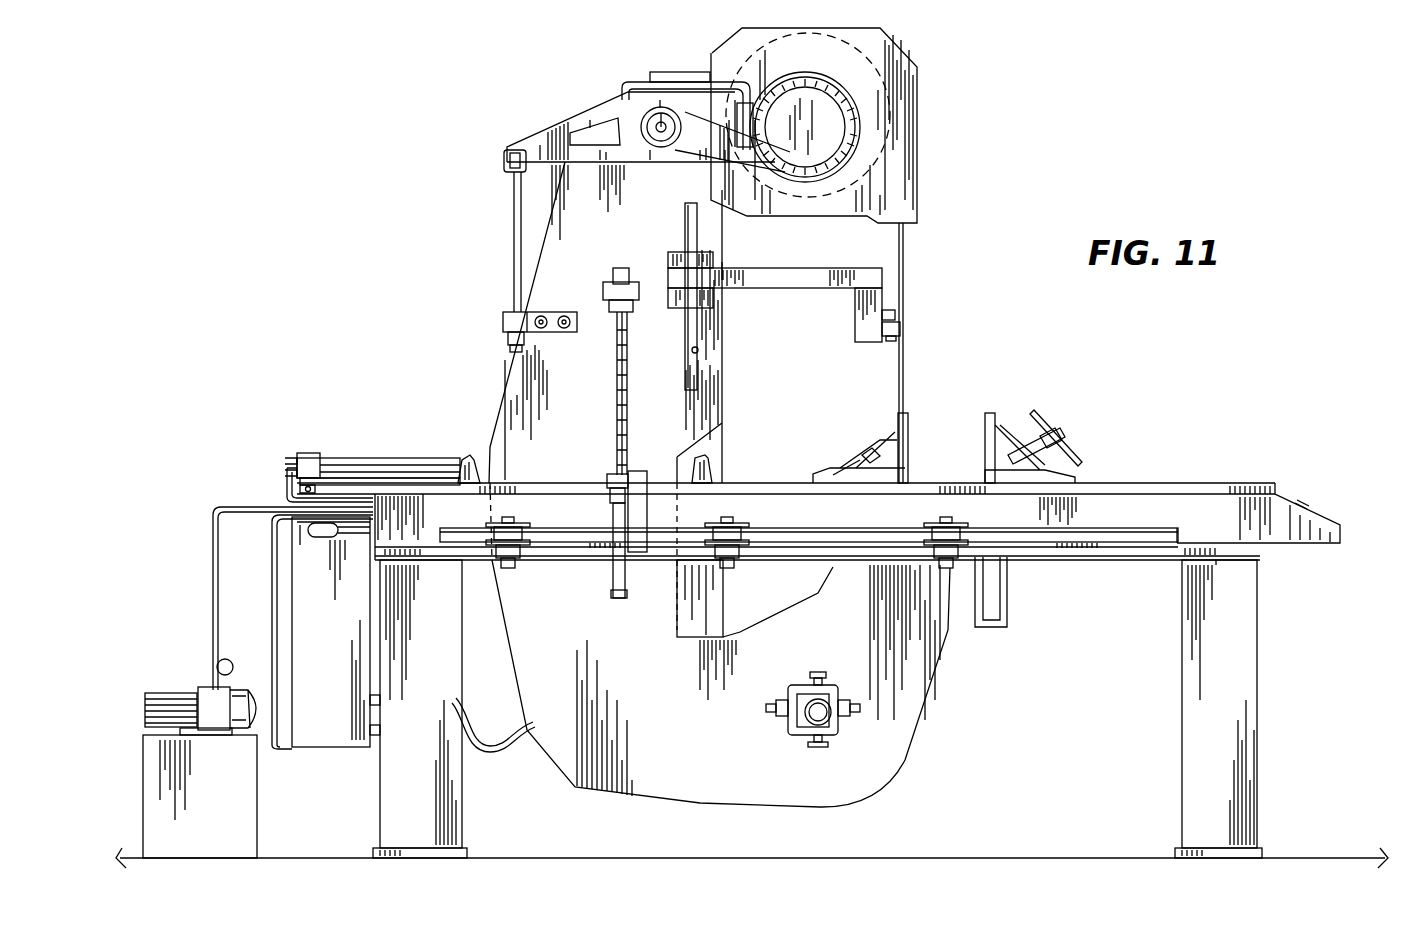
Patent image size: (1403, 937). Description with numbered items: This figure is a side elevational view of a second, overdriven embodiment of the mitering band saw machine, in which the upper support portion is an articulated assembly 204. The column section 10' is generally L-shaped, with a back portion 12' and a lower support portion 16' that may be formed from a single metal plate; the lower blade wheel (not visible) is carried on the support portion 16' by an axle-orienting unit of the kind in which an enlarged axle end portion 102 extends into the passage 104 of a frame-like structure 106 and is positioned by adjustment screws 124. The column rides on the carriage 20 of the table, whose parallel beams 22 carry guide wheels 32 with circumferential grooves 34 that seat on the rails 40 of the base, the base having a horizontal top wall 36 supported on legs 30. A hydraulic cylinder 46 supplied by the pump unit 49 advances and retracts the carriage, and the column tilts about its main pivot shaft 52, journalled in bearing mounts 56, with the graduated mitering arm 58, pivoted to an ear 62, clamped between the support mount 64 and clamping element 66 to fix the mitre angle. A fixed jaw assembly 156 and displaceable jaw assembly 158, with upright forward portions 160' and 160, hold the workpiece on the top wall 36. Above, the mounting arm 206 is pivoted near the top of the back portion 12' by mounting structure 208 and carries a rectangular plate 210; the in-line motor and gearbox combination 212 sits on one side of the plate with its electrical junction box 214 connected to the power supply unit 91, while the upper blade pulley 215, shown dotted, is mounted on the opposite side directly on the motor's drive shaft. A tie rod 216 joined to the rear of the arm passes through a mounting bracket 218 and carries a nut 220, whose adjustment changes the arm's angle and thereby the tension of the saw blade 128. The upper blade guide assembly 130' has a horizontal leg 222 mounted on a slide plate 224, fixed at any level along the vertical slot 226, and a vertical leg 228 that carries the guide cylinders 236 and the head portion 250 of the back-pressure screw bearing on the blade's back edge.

The unitary section of the column 10' is at (577, 375).
The back portion 12' is at (507, 304).
The lower support portion 16' is at (731, 683).
The carriage 20 is at (1010, 608).
The parallel beams 22 is at (728, 568).
The legs 30 is at (385, 792).
The guide wheels 32 is at (745, 525).
The circumferential grooves 34 is at (526, 525).
The horizontal top wall 36 is at (1198, 488).
The rails 40 is at (598, 545).
The cylinder 46 is at (392, 462).
The pump unit 49 is at (170, 700).
The main pivot shaft 52 is at (680, 472).
The bearing mounts 56 is at (468, 457).
The mitering arm 58 is at (628, 405).
The ear 62 is at (618, 270).
The support mount 64 is at (638, 560).
The clamping element 66 is at (608, 478).
The power supply unit 91 is at (325, 725).
The enlarged-diameter end portion of the axle 102 is at (825, 727).
The passage 104 is at (800, 692).
The frame-like structure 106 is at (795, 733).
The adjustment screws 124 is at (818, 680).
The saw blade 128 is at (792, 322).
The upper blade guide assembly 130' is at (830, 353).
The fixed jaw assembly 156 is at (893, 442).
The displaceable jaw assembly 158 is at (1000, 412).
The upright forward portion 160 is at (998, 448).
The upright forward portion 160' is at (933, 434).
The upper support portion assembly 204 is at (930, 150).
The mounting arm 206 is at (683, 167).
The mounting structure 208 is at (640, 120).
The plate 210 is at (905, 104).
The motor and gearbox combination 212 is at (825, 72).
The electrical junction box 214 is at (745, 175).
The upper blade pulley 215 is at (920, 190).
The tie rod 216 is at (514, 203).
The mounting bracket 218 is at (555, 334).
The nut 220 is at (510, 340).
The horizontal leg 222 is at (786, 270).
The slide plate 224 is at (683, 295).
The vertical slot 226 is at (698, 350).
The vertical leg 228 is at (876, 298).
The guide cylinder 236 is at (902, 332).
The head portion 250 is at (897, 315).